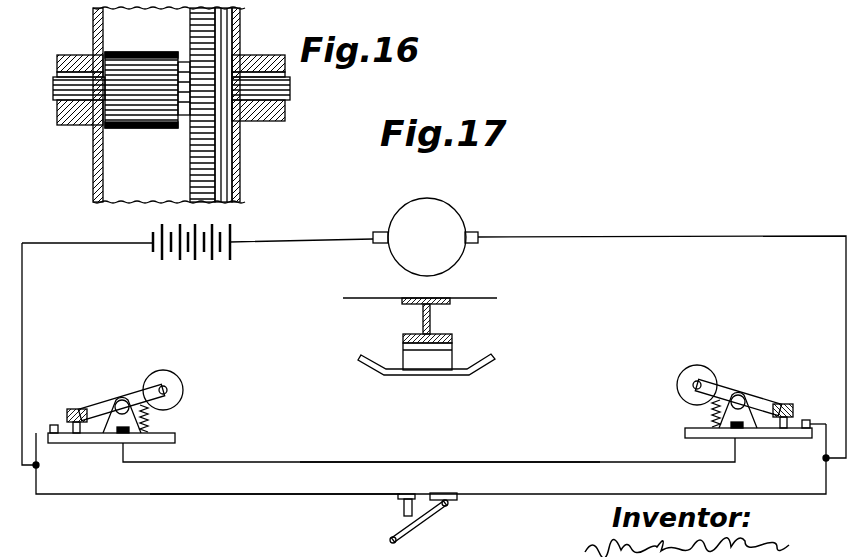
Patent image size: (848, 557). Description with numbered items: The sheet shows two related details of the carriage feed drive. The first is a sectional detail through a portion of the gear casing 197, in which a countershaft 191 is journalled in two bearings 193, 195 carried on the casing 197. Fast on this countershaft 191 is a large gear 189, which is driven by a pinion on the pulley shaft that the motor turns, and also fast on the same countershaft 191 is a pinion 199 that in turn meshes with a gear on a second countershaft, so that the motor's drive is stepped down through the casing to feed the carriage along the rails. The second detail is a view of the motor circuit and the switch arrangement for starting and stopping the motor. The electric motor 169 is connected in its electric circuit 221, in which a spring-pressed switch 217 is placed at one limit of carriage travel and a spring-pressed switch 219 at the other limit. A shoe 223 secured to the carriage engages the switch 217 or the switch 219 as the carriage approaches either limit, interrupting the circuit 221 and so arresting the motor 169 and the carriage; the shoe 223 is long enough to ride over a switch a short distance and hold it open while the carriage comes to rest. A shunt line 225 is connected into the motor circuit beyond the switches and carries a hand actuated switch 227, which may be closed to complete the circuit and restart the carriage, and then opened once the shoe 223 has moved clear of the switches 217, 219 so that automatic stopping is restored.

In FIG. 17, the electric motor 169 is at (455, 215).
In FIG. 16, the large gear 189 is at (215, 166).
In FIG. 16, the countershaft 191 is at (288, 95).
In FIG. 16, the bearing 193 is at (258, 57).
In FIG. 16, the bearing 195 is at (70, 56).
In FIG. 16, the casing 197 is at (93, 152).
In FIG. 16, the pinion 199 is at (142, 130).
In FIG. 17, the spring-pressed switch 217 is at (79, 404).
In FIG. 17, the spring-pressed switch 219 is at (765, 400).
In FIG. 17, the electric circuit 221 is at (420, 463).
In FIG. 17, the shoe 223 is at (471, 370).
In FIG. 17, the shunt line 225 is at (245, 495).
In FIG. 17, the hand actuated switch 227 is at (412, 523).